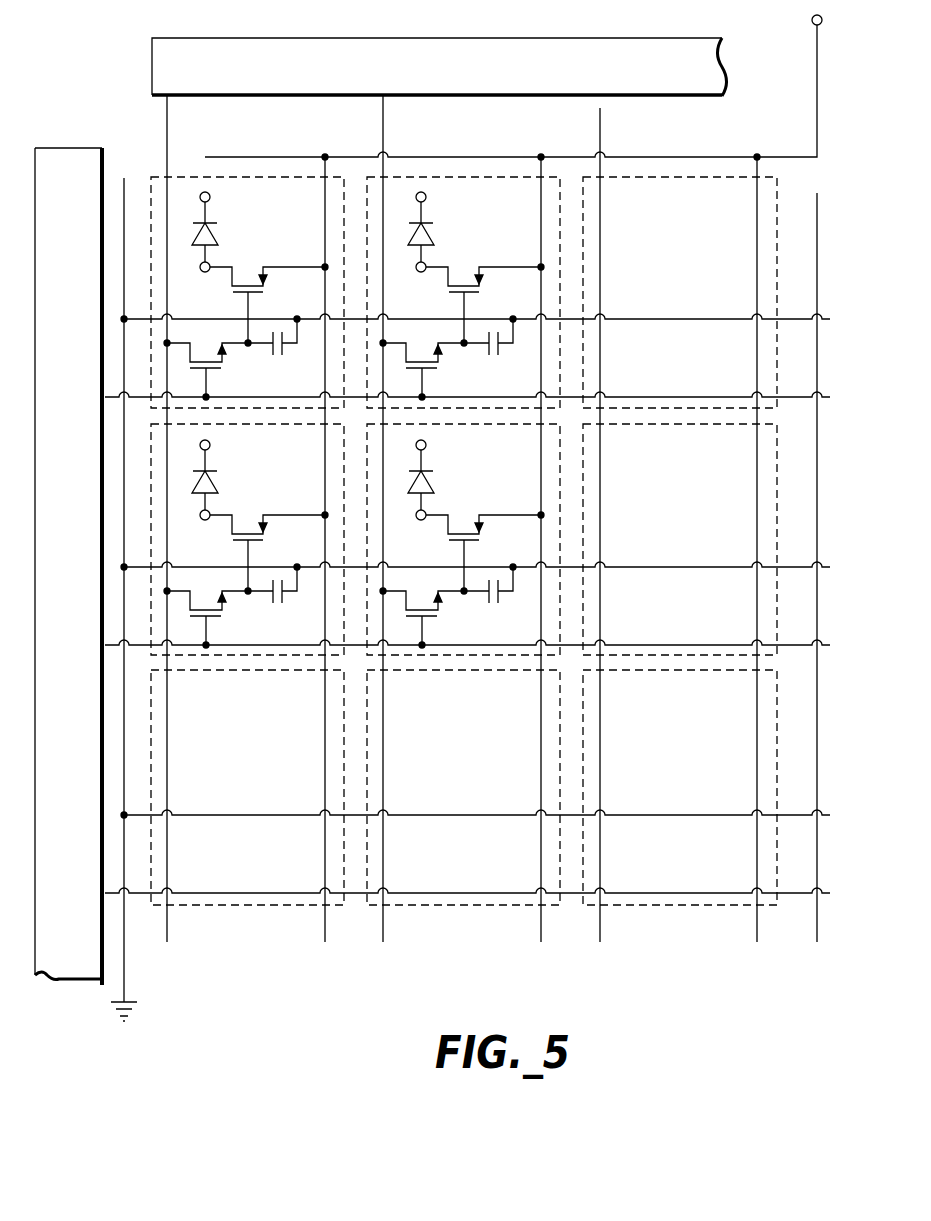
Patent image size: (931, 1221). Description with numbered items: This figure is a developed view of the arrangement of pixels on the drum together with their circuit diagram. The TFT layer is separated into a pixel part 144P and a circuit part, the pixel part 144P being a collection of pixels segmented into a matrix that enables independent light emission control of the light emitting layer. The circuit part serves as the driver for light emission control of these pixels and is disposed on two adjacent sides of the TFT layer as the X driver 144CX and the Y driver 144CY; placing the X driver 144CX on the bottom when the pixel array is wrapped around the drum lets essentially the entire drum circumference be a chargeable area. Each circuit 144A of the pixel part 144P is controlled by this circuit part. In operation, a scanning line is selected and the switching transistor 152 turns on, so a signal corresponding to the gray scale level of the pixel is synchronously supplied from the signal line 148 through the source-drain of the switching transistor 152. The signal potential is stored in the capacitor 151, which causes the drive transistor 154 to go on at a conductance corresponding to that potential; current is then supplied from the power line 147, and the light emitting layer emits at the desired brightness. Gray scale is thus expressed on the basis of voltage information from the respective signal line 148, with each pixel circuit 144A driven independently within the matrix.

The Y driver 144CY is at (555, 38).
The X driver 144CX is at (60, 148).
The circuit 144A is at (230, 252).
The pixel part 144P is at (807, 267).
The drive transistor 154 is at (269, 536).
The switching transistor 152 is at (218, 643).
The capacitor 151 is at (271, 646).
The signal line 148 is at (167, 925).
The power line 147 is at (325, 925).